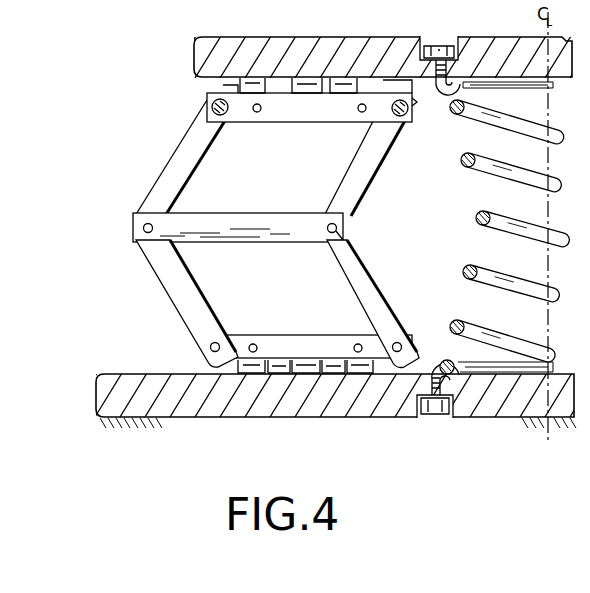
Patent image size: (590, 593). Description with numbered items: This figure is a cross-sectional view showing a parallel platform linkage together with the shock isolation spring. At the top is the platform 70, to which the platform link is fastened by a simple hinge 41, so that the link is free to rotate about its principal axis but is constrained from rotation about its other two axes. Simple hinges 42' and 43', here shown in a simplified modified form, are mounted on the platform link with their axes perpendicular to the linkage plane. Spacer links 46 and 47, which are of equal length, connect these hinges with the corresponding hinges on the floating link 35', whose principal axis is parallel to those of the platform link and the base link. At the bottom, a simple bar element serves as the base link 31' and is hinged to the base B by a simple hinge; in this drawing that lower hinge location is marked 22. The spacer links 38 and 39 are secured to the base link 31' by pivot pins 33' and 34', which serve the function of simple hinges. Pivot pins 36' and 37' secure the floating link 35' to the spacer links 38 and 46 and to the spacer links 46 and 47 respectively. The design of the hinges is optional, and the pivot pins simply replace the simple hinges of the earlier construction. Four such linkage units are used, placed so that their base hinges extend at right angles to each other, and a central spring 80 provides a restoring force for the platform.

The platform 70 is at (367, 38).
The base B is at (170, 418).
The simple hinge 41 is at (312, 79).
The simple hinge 42' is at (185, 100).
The simple hinge 43' is at (312, 121).
The spacer link 46 is at (171, 173).
The spacer link 47 is at (372, 190).
The floating link 35' is at (238, 242).
The pivot pin 36' is at (115, 226).
The pivot pin 37' is at (361, 227).
The spacer link 38 is at (193, 300).
The spacer link 39 is at (354, 270).
The base link 31' is at (311, 323).
The pivot pin 33' is at (182, 345).
The pivot pin 34' is at (417, 320).
The lower slide blocks 22 is at (267, 373).
The central spring 80 is at (478, 217).